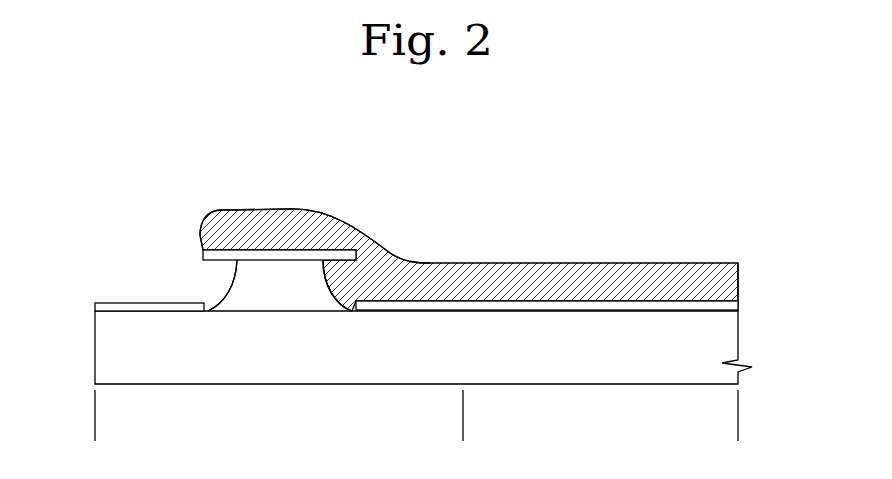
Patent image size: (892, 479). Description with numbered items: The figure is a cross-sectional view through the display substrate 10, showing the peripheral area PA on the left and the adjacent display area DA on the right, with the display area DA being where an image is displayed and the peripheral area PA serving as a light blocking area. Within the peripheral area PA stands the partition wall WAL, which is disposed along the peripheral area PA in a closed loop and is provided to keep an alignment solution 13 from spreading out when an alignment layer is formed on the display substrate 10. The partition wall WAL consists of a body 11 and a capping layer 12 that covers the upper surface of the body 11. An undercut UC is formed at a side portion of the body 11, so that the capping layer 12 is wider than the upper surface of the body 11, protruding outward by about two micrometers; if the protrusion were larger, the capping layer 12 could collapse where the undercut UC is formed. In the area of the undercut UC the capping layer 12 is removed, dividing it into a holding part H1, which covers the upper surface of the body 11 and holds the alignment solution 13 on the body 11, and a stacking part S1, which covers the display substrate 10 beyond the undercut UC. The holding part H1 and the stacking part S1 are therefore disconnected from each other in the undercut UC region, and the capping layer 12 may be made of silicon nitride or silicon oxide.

The display substrate 10 is at (727, 338).
The body 11 is at (277, 272).
The capping layer 12 is at (338, 158).
The alignment solution 13 is at (730, 282).
The holding part H1 is at (317, 258).
The stacking part S1 is at (437, 308).
The partition wall WAL is at (393, 122).
The undercut UC is at (220, 281).
The peripheral area PA is at (462, 435).
The display area DA is at (737, 435).